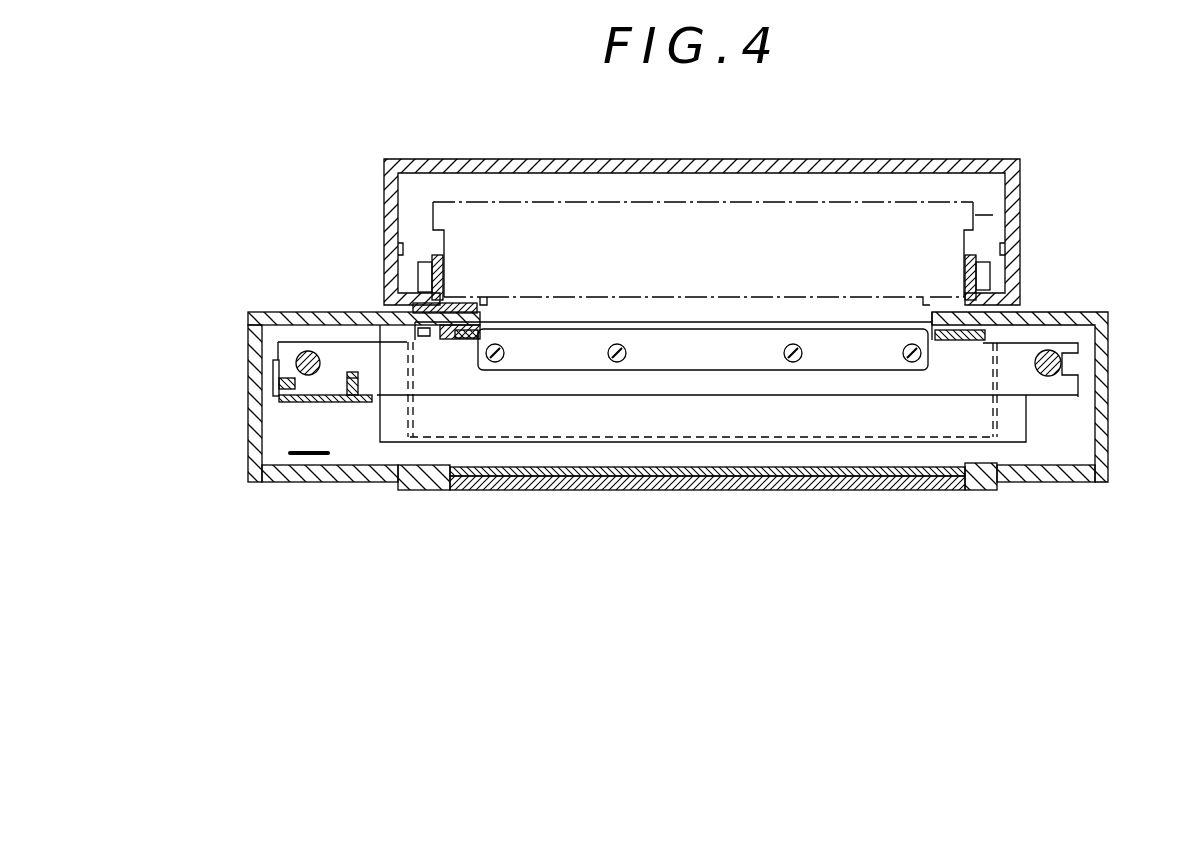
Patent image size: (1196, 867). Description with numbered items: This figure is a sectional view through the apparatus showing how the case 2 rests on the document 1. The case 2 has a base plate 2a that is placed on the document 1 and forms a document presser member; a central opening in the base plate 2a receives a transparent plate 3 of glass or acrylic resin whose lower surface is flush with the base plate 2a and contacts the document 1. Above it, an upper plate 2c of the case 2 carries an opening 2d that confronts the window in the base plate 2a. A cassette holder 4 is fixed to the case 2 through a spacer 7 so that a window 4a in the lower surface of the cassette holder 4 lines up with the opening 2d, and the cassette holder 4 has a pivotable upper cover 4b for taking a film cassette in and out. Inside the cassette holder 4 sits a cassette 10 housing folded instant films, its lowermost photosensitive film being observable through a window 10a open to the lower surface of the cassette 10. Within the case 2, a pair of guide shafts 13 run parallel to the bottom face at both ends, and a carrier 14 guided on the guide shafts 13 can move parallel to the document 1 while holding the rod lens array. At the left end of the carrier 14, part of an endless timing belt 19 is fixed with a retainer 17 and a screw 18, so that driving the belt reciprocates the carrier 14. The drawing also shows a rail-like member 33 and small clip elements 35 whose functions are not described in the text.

The document 1 is at (432, 489).
The case 2 is at (651, 385).
The base plate 2a is at (283, 476).
The upper plate 2c is at (284, 313).
The opening 2d is at (490, 323).
The transparent plate 3 is at (632, 486).
The cassette holder 4 is at (730, 204).
The window 4a is at (497, 312).
The upper cover 4b is at (808, 166).
The spacer 7 is at (398, 298).
The cassette 10 is at (978, 215).
The window 10a is at (488, 305).
The guide shaft 13 is at (308, 350).
The carrier 14 is at (1075, 386).
The retainer 17 is at (272, 400).
The screw 18 is at (276, 384).
The timing belt 19 is at (314, 393).
The rail 33 is at (738, 358).
The clip 35 is at (464, 340).